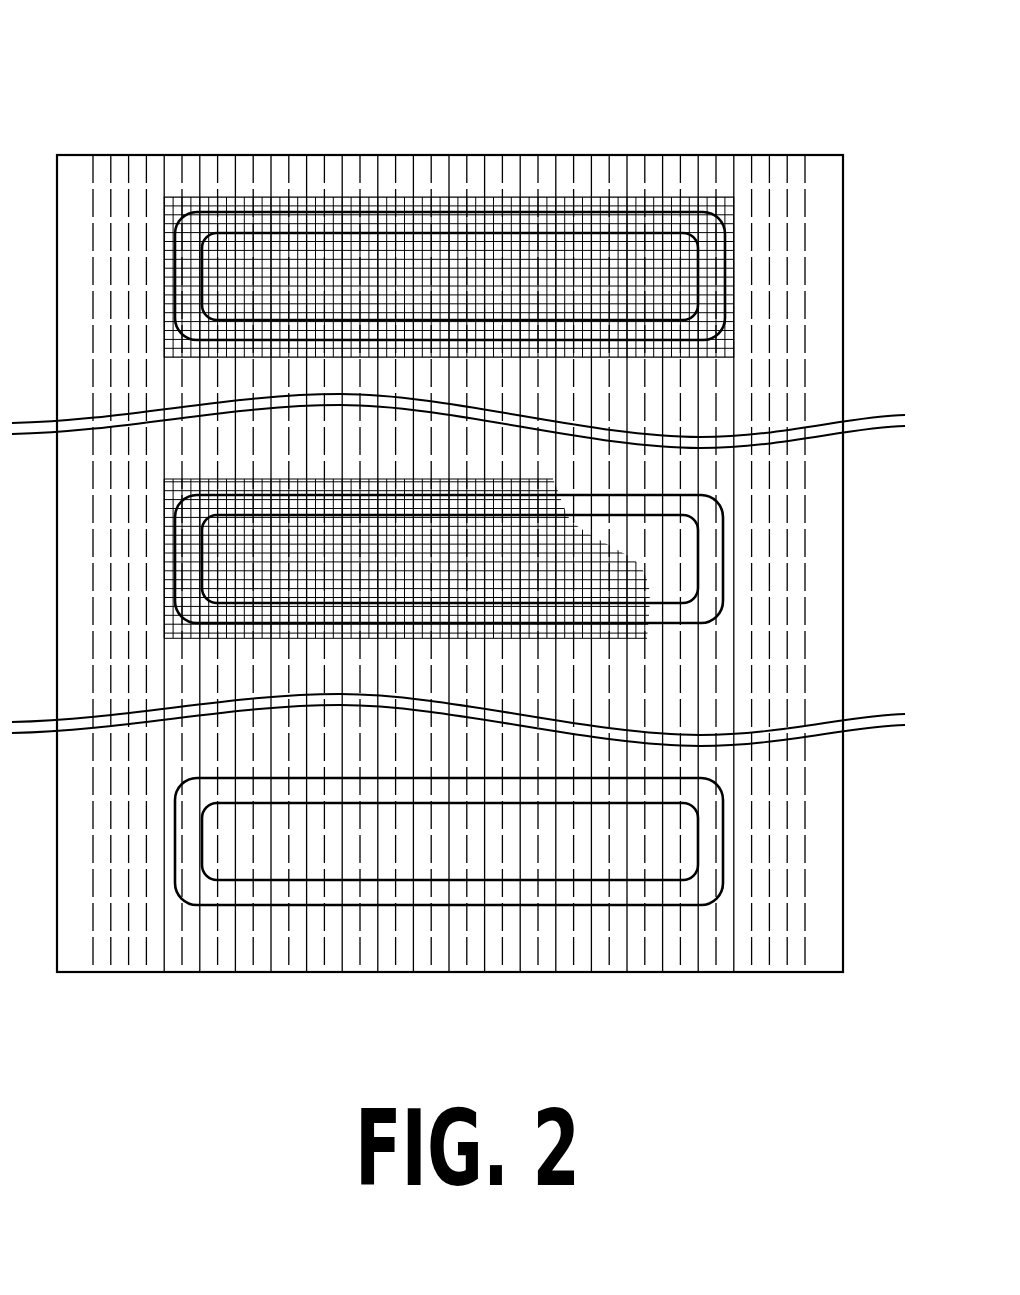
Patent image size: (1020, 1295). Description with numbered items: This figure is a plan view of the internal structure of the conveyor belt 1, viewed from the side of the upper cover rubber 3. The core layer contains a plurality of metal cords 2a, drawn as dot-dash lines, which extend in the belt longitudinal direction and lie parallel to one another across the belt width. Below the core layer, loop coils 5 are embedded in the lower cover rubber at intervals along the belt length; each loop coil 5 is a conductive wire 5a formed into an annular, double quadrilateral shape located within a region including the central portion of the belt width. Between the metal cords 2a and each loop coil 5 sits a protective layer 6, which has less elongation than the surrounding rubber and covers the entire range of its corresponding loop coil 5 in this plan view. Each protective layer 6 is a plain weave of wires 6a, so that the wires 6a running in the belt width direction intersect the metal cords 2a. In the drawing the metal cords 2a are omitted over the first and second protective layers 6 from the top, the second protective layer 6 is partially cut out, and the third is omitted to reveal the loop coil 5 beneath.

The conveyor belt 1 is at (723, 150).
The metal cords 2a is at (218, 165).
The upper cover rubber 3 is at (813, 170).
The loop coils 5 is at (727, 553).
The conductive wire 5a is at (725, 573).
The protective layers 6 is at (582, 200).
The wires 6a is at (548, 200).